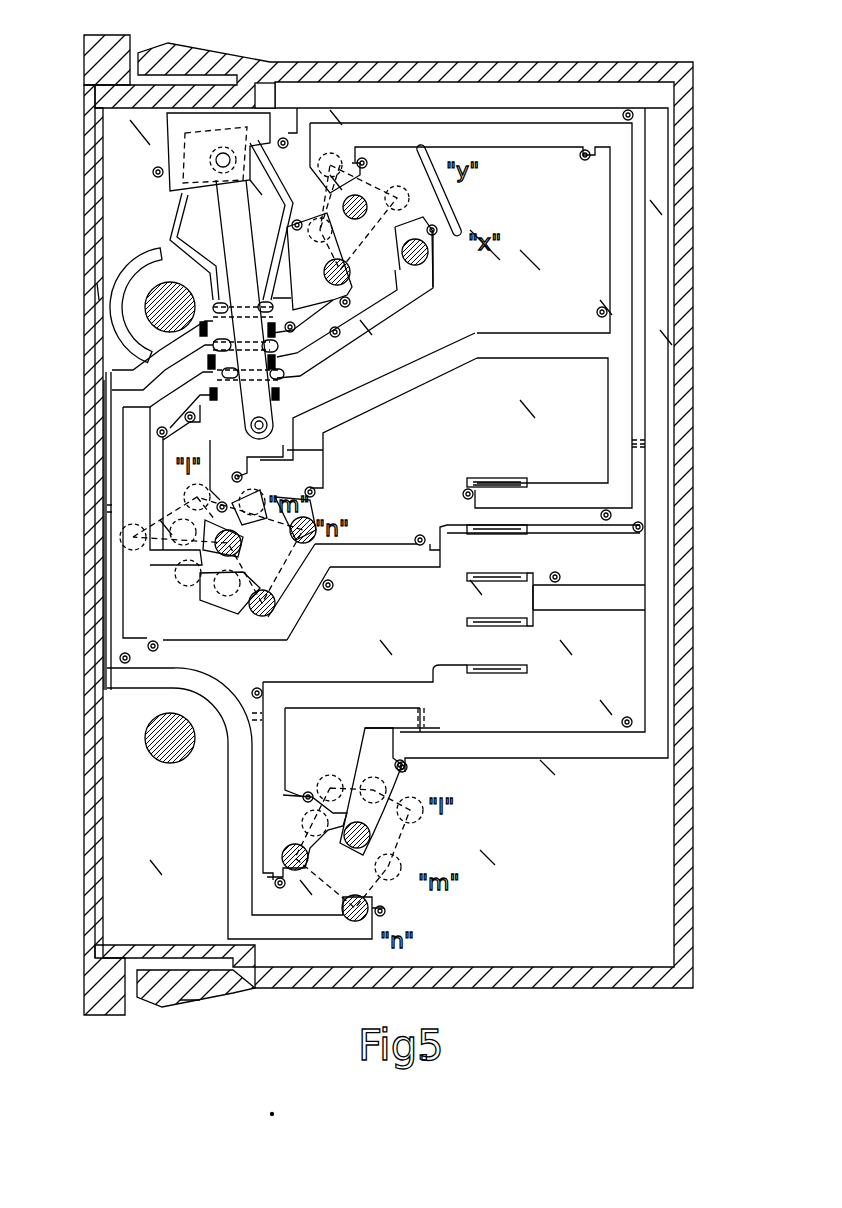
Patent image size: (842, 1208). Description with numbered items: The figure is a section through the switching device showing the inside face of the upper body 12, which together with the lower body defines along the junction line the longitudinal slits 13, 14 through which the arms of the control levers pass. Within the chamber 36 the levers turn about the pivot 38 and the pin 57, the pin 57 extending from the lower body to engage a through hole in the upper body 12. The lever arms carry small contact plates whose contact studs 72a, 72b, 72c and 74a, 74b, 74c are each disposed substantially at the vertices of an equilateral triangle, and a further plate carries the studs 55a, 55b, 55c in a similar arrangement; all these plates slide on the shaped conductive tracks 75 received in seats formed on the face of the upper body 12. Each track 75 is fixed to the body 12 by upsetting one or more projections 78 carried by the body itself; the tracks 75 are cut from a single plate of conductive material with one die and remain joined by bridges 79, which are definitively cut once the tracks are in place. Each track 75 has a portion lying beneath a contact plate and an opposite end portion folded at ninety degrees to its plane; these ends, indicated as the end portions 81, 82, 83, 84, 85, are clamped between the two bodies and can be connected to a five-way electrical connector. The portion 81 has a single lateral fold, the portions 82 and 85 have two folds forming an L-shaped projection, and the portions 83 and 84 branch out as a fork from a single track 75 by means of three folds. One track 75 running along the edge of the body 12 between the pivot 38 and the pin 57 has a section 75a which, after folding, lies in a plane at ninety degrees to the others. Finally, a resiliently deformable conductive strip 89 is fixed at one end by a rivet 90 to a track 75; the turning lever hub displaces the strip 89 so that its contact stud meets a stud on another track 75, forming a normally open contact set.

The upper body 12 is at (101, 68).
The longitudinal slit 13 is at (97, 806).
The longitudinal slit 14 is at (97, 283).
The chamber 36 is at (118, 910).
The pivot 38 is at (160, 295).
The cam 55a is at (358, 220).
The cam 55b is at (350, 280).
The cam 55c is at (420, 265).
The pin 57 is at (175, 762).
The contact stud 72a is at (240, 547).
The contact stud 72b is at (262, 617).
The contact stud 72c is at (310, 520).
The contact stud 74a is at (372, 836).
The contact stud 74b is at (298, 872).
The contact stud 74c is at (362, 920).
The conductive track 75 is at (400, 130).
The track section 75a is at (103, 500).
The projection 78 is at (628, 110).
The bridge 79 is at (640, 445).
The end portion 81 is at (503, 480).
The end portion 82 is at (510, 534).
The end portion 83 is at (507, 581).
The end portion 84 is at (512, 626).
The end portion 85 is at (497, 665).
The conductive strip 89 is at (228, 220).
The rivet 90 is at (251, 427).